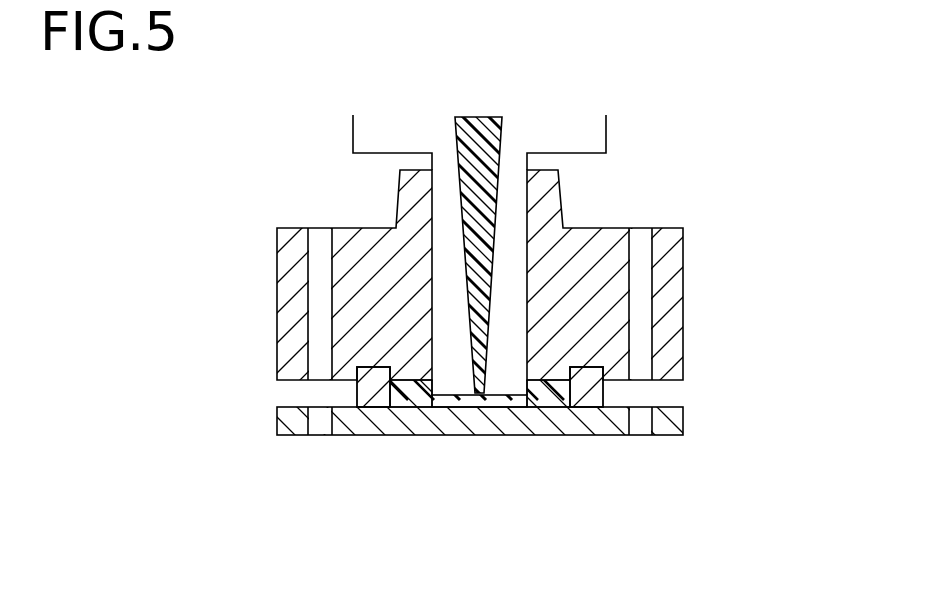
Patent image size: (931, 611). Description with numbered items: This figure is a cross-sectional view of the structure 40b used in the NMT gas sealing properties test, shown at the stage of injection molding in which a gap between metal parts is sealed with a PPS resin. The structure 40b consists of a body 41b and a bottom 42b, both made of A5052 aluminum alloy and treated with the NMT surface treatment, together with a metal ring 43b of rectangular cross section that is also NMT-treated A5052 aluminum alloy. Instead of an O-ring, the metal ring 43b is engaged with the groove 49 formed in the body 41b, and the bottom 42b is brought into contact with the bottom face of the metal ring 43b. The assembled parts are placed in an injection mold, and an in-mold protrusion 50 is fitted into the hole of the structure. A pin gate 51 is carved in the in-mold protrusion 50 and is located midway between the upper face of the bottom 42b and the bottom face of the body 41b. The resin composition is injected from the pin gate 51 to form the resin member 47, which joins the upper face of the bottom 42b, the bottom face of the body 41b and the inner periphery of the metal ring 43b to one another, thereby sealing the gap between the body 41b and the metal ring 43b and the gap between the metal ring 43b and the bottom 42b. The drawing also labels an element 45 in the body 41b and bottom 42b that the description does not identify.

The structure 40b is at (465, 308).
The body 41b is at (292, 228).
The bottom 42b is at (277, 420).
The metal ring 43b is at (358, 388).
The through hole 45 is at (317, 238).
The resin member 47 is at (553, 402).
The groove 49 is at (370, 367).
The in-mold protrusion 50 is at (607, 119).
The pin gate 51 is at (502, 119).